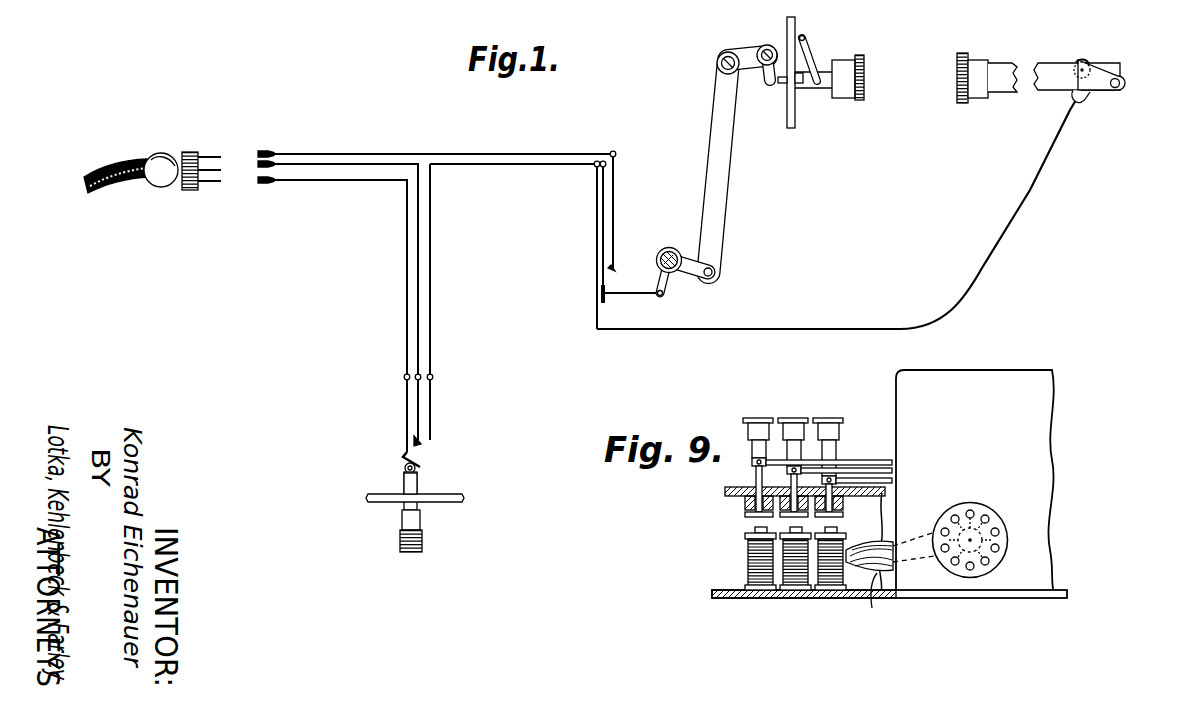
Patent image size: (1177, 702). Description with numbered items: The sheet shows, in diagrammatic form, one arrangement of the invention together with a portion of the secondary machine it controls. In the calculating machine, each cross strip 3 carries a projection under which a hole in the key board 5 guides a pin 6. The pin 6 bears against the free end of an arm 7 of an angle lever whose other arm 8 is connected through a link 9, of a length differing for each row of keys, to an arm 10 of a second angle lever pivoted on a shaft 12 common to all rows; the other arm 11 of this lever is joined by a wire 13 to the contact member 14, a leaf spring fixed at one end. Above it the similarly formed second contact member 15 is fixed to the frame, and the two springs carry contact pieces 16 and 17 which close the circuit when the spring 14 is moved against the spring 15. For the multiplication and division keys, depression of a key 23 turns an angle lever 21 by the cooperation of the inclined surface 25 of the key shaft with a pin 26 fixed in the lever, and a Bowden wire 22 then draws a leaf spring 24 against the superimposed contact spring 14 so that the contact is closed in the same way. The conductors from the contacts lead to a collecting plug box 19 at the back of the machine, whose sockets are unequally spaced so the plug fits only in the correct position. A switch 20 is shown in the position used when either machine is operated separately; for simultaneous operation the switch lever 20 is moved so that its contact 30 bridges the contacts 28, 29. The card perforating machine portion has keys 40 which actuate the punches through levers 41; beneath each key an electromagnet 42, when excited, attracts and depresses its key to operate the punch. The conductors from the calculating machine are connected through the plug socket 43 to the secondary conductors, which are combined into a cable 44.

In FIG. 1, the cross strip 3 is at (812, 50).
In FIG. 1, the key board 5 is at (797, 25).
In FIG. 1, the pin 6 is at (783, 85).
In FIG. 1, the arm of angle lever 7 is at (766, 80).
In FIG. 1, the arm of angle lever 8 is at (748, 51).
In FIG. 1, the link 9 is at (722, 160).
In FIG. 1, the arm of second angle lever 10 is at (690, 266).
In FIG. 1, the arm of second angle lever 11 is at (668, 285).
In FIG. 1, the shaft 12 is at (675, 248).
In FIG. 1, the wire 13 is at (625, 295).
In FIG. 1, the contact member 14 is at (606, 212).
In FIG. 1, the second contact member 15 is at (617, 163).
In FIG. 1, the contact piece 16 is at (606, 265).
In FIG. 1, the contact piece 17 is at (615, 271).
In FIG. 1, the collecting plug box 19 is at (167, 163).
In FIG. 1, the switch 20 is at (423, 542).
In FIG. 1, the angle lever 21 is at (1112, 77).
In FIG. 1, the Bowden wire 22 is at (864, 328).
In FIG. 1, the key 23 is at (958, 77).
In FIG. 1, the spring 24 is at (596, 249).
In FIG. 1, the inclined surface 25 is at (1093, 60).
In FIG. 1, the pin 26 is at (1118, 92).
In FIG. 1, the contact 28 is at (419, 440).
In FIG. 1, the contact 29 is at (431, 438).
In FIG. 1, the contact 30 is at (404, 457).
In FIG. 9, the key 40 is at (825, 455).
In FIG. 9, the lever 41 is at (870, 460).
In FIG. 9, the electromagnet 42 is at (755, 562).
In FIG. 9, the plug socket 43 is at (963, 577).
In FIG. 9, the cable 44 is at (890, 579).